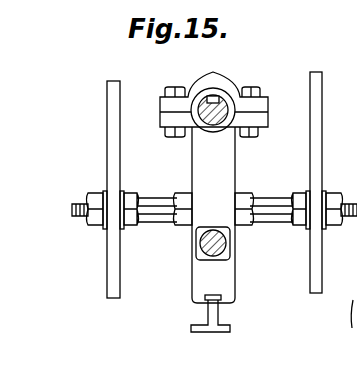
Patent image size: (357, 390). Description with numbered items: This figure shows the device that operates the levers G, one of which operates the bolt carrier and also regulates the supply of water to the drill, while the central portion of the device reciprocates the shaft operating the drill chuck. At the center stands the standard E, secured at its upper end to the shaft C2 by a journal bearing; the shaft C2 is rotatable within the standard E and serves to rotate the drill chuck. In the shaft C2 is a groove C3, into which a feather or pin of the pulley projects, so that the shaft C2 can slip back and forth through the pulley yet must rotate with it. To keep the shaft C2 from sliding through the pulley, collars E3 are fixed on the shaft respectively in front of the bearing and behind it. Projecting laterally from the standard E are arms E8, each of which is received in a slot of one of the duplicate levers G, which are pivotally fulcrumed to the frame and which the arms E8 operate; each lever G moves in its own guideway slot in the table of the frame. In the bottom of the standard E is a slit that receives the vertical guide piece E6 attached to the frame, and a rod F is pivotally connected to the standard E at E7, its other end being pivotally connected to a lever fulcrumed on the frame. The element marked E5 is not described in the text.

The lever G is at (107, 108).
The standard E is at (213, 215).
The collar E3 is at (206, 100).
The groove C3 is at (216, 104).
The shaft C2 is at (221, 99).
The arm E8 is at (152, 196).
The pivotal connection of rod F to standard E7 is at (222, 260).
The rod F is at (204, 250).
The block E5 is at (205, 300).
The vertical guide piece E6 is at (218, 318).